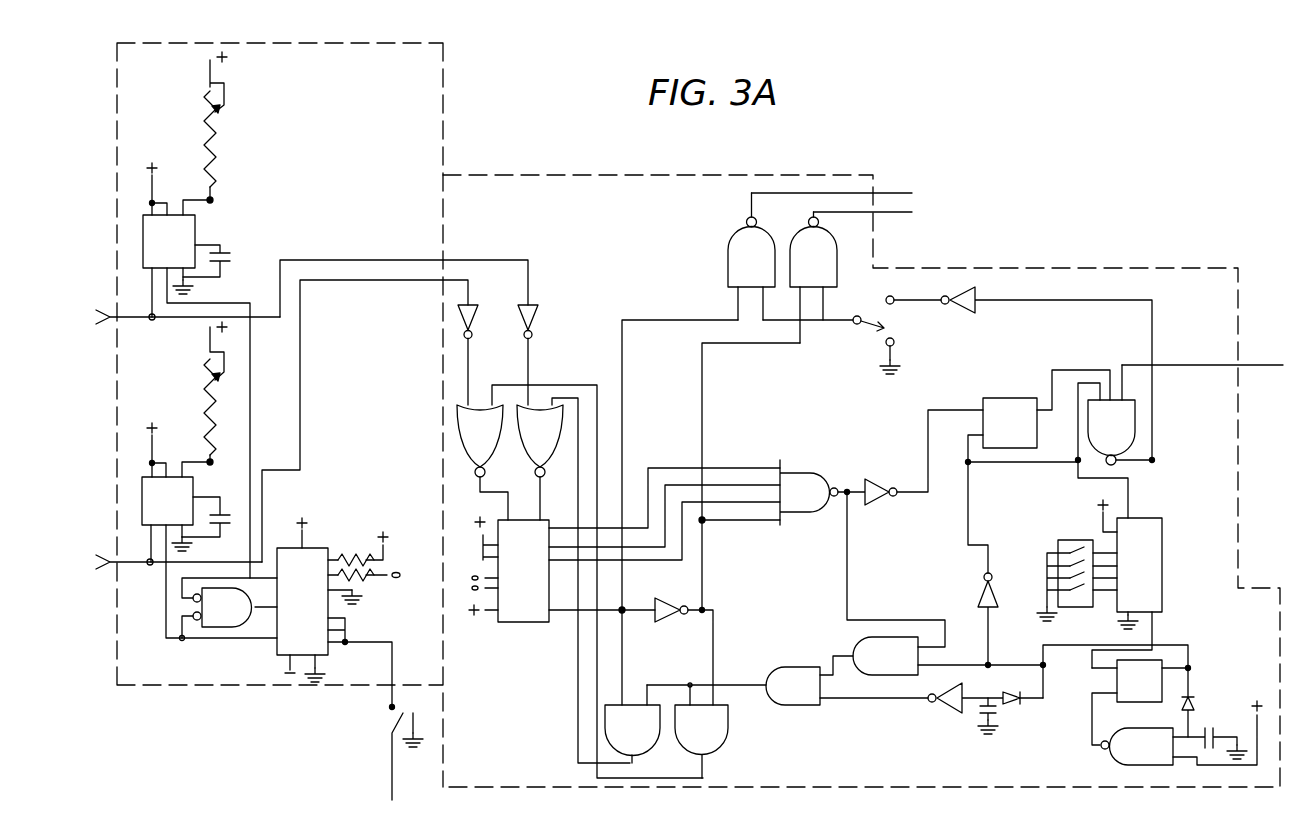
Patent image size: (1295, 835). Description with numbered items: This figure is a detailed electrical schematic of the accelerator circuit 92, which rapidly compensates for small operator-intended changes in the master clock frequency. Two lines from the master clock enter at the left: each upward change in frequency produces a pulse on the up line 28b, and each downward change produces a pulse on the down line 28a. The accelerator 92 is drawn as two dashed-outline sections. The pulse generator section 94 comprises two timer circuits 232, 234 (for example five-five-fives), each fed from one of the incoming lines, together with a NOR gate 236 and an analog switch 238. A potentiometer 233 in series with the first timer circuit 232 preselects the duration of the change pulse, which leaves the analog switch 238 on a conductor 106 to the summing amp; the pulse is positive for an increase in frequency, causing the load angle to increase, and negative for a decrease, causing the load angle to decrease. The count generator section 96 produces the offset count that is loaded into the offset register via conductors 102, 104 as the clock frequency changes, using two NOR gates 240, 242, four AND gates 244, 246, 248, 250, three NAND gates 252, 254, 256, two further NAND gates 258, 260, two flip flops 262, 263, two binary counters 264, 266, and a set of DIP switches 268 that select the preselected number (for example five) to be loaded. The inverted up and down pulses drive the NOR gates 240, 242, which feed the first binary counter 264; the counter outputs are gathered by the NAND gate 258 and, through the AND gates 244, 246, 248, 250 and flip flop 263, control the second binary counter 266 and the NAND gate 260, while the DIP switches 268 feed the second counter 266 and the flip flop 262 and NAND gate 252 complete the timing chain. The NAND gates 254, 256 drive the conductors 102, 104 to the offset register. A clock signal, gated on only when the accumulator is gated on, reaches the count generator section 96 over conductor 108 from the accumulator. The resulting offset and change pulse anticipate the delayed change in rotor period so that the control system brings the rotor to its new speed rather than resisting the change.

The accelerator circuit 92 is at (500, 175).
The pulse generator section 94 is at (388, 430).
The count generator section 96 is at (820, 436).
The down line 28a is at (128, 320).
The up line 28b is at (128, 565).
The conductor 102 is at (890, 193).
The conductor 104 is at (890, 212).
The conductor 106 is at (392, 768).
The conductor 108 is at (1180, 365).
The timer circuit 232 is at (196, 370).
The potentiometer 233 is at (228, 110).
The timer circuit 234 is at (209, 480).
The NOR gate 236 is at (229, 609).
The analog switch 238 is at (338, 612).
The NOR gate 240 is at (580, 581).
The NOR gate 242 is at (573, 580).
The AND gate 244 is at (632, 724).
The AND gate 246 is at (701, 730).
The AND gate 248 is at (904, 695).
The AND gate 250 is at (885, 656).
The NAND gate 252 is at (1181, 733).
The NAND gate 254 is at (751, 256).
The NAND gate 256 is at (813, 277).
The NAND gate 258 is at (881, 528).
The NAND gate 260 is at (1115, 441).
The flip flop 262 is at (1127, 702).
The flip flop 263 is at (1038, 519).
The binary counter 264 is at (624, 586).
The binary counter 266 is at (1056, 618).
The set of DIP switches 268 is at (1075, 540).